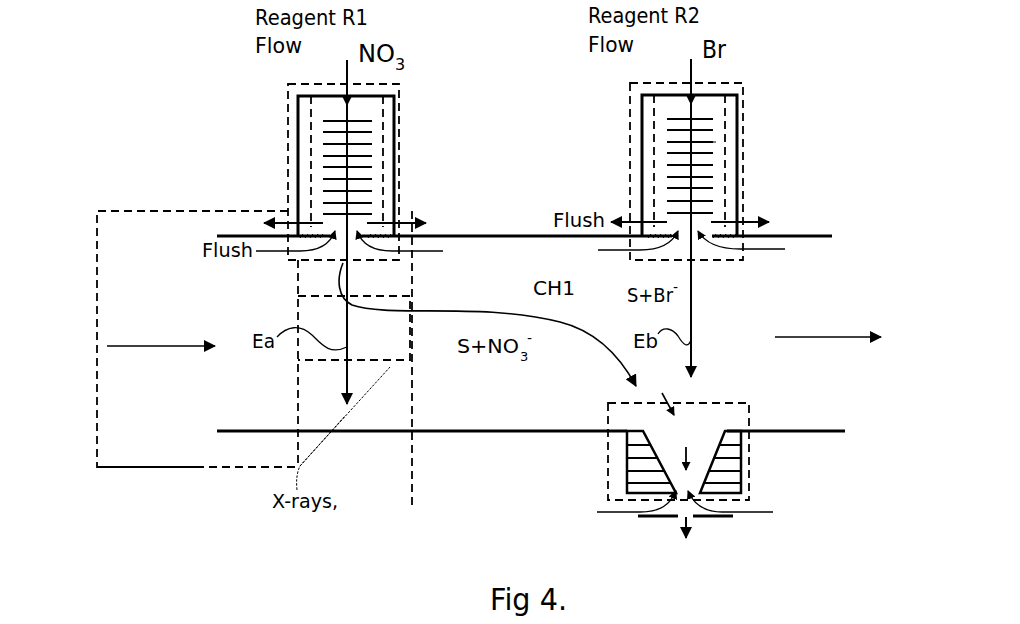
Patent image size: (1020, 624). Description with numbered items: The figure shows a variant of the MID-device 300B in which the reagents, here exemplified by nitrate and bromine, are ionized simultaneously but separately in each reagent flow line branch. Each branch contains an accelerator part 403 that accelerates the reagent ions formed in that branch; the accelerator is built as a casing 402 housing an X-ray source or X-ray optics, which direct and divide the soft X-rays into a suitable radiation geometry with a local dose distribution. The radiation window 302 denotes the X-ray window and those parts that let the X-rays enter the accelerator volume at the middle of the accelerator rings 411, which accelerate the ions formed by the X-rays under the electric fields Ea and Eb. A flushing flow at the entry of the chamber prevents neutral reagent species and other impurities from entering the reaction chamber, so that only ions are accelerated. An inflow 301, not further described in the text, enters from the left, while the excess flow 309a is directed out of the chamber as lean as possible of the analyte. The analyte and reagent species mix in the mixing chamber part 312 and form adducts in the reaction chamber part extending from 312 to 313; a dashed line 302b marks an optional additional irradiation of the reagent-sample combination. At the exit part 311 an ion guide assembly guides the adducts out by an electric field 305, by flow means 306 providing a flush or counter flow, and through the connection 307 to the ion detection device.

The MID-device 300B is at (131, 148).
The radiation window 302 is at (311, 118).
The casing 402 is at (298, 138).
The accelerator part 403 is at (288, 188).
The accelerator rings 411 is at (712, 142).
The sample inlet 301 is at (161, 327).
The excess flow 309a is at (828, 323).
The mixing chamber part 312 is at (200, 467).
The reaction chamber part 313 is at (412, 507).
The additional irradiation window 302b is at (321, 481).
The electric field 305 is at (627, 483).
The flow means 306 is at (597, 511).
The connection to ion detection device 307 is at (685, 539).
The exit part 311 is at (750, 452).